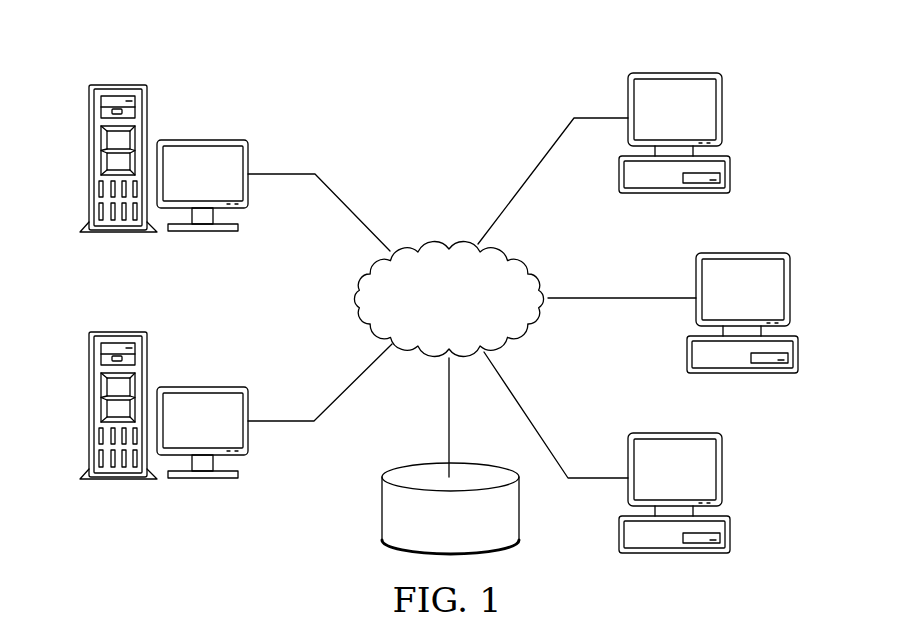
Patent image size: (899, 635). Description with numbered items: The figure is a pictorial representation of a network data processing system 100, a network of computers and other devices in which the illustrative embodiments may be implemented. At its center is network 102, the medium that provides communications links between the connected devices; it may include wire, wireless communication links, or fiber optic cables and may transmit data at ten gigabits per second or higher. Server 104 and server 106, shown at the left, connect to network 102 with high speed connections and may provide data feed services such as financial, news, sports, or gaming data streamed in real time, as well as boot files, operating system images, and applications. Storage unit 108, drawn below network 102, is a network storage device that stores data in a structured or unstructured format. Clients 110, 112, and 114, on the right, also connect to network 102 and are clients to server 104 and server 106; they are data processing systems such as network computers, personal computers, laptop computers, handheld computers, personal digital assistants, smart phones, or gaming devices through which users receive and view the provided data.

The network data processing system 100 is at (316, 85).
The network 102 is at (447, 240).
The server 104 is at (89, 158).
The server 106 is at (89, 405).
The storage unit 108 is at (382, 510).
The client 110 is at (730, 175).
The client 112 is at (798, 352).
The client 114 is at (730, 535).